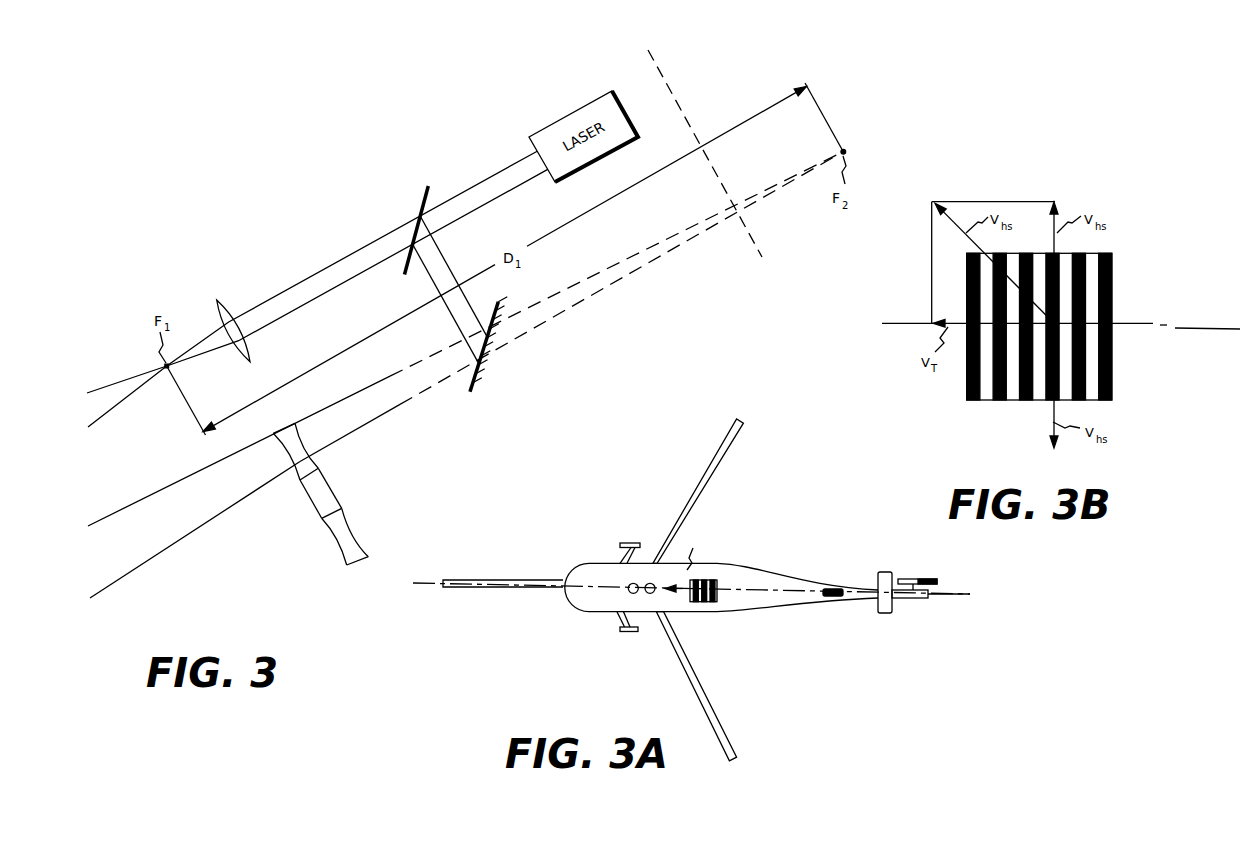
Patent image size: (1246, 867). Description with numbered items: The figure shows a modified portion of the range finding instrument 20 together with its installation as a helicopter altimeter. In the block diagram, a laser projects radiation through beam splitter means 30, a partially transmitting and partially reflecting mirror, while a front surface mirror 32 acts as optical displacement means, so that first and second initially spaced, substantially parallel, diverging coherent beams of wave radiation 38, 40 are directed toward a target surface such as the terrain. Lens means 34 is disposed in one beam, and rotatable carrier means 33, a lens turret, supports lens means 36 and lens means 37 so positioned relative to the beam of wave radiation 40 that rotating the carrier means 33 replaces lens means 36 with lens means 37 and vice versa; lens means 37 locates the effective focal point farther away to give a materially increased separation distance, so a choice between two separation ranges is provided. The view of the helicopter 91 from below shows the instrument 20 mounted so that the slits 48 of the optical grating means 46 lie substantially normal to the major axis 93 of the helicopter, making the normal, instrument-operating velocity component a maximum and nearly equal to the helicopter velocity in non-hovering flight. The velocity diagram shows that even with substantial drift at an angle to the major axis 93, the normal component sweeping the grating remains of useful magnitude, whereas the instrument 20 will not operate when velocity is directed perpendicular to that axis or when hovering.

In FIG. 3, the range finding instrument 20 is at (675, 102).
In FIG. 3, the beam splitter means 30 is at (428, 186).
In FIG. 3, the front surface mirror 32 is at (470, 392).
In FIG. 3, the carrier means 33 is at (340, 500).
In FIG. 3, the lens means 34 is at (217, 300).
In FIG. 3, the lens means 36 is at (348, 567).
In FIG. 3, the lens means 37 is at (296, 421).
In FIG. 3A, the beam of wave radiation 38 is at (628, 585).
In FIG. 3A, the beam of wave radiation 40 is at (648, 594).
In FIG. 3A, the optical grating means 46 is at (710, 602).
In FIG. 3B, the optical grating means 46 is at (1023, 398).
In FIG. 3A, the slits 48 is at (697, 602).
In FIG. 3B, the slits 48 is at (985, 392).
In FIG. 3A, the helicopter 91 is at (573, 612).
In FIG. 3A, the major axis 93 is at (431, 585).
In FIG. 3B, the major axis 93 is at (1193, 327).